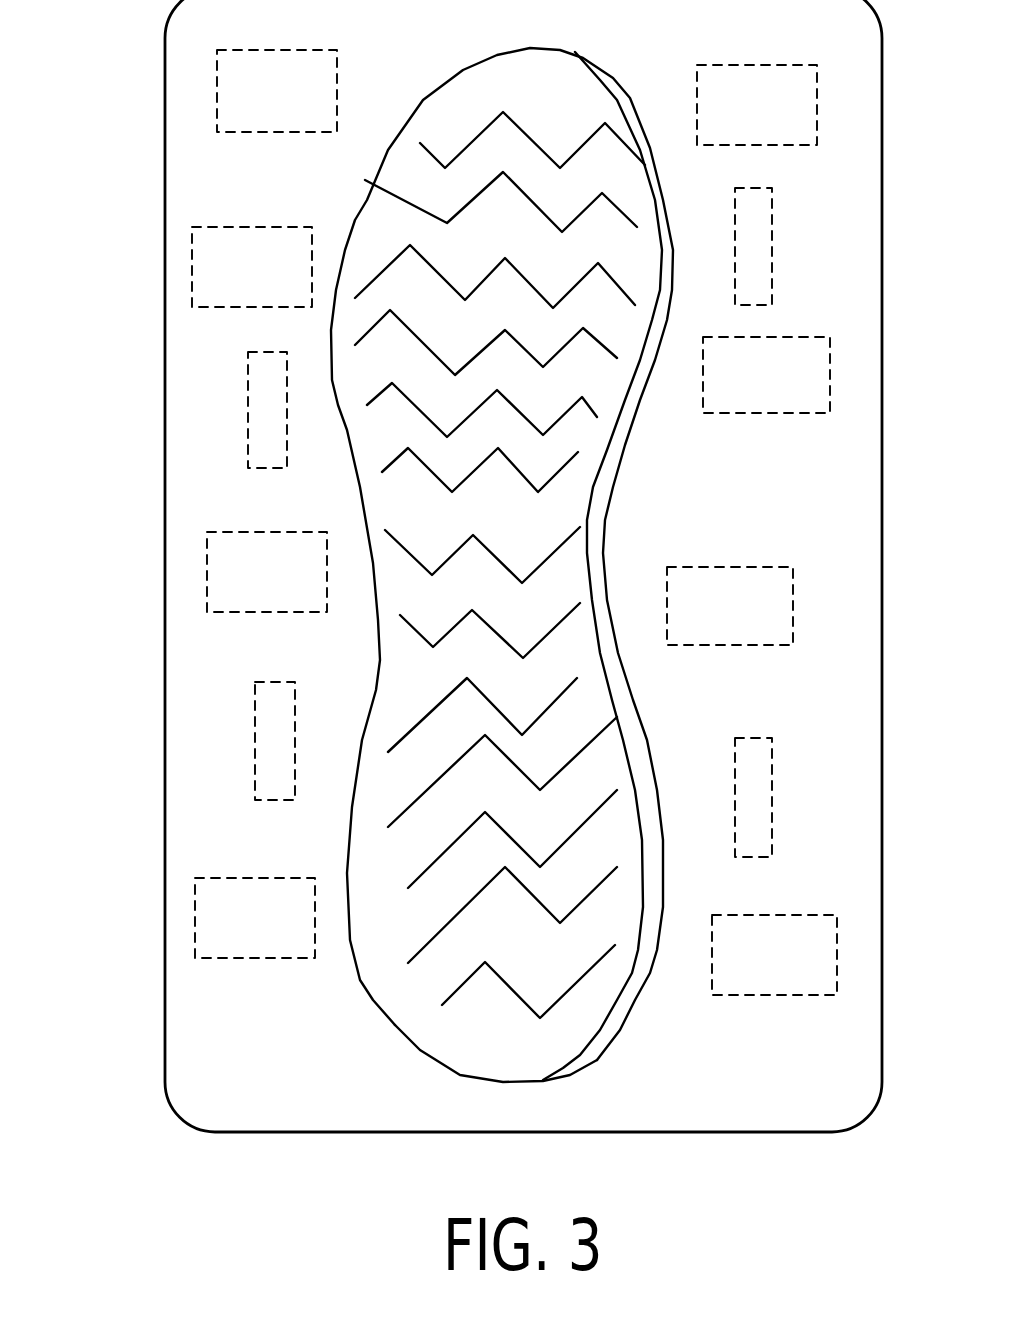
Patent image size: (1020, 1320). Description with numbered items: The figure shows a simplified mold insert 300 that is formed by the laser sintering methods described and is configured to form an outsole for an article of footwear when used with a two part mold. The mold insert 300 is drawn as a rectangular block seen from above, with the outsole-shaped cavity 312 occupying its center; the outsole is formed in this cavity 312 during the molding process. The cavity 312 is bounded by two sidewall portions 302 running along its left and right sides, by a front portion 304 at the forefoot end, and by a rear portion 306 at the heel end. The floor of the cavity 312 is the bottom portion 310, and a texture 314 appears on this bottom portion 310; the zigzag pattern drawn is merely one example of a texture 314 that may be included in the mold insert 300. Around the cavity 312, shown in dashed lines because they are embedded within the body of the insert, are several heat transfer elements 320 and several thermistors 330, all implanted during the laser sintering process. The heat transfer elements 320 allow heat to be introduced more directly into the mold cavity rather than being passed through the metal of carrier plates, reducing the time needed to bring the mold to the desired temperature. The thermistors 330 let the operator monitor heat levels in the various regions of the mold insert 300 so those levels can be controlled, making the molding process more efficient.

The mold insert 300 is at (152, 104).
The sidewall portions 302 is at (593, 560).
The front portion 304 is at (593, 56).
The rear portion 306 is at (495, 1083).
The bottom portion 310 is at (475, 802).
The cavity 312 is at (423, 530).
The texture 314 is at (612, 953).
The heat transfer elements 320 is at (190, 276).
The thermistors 330 is at (756, 263).